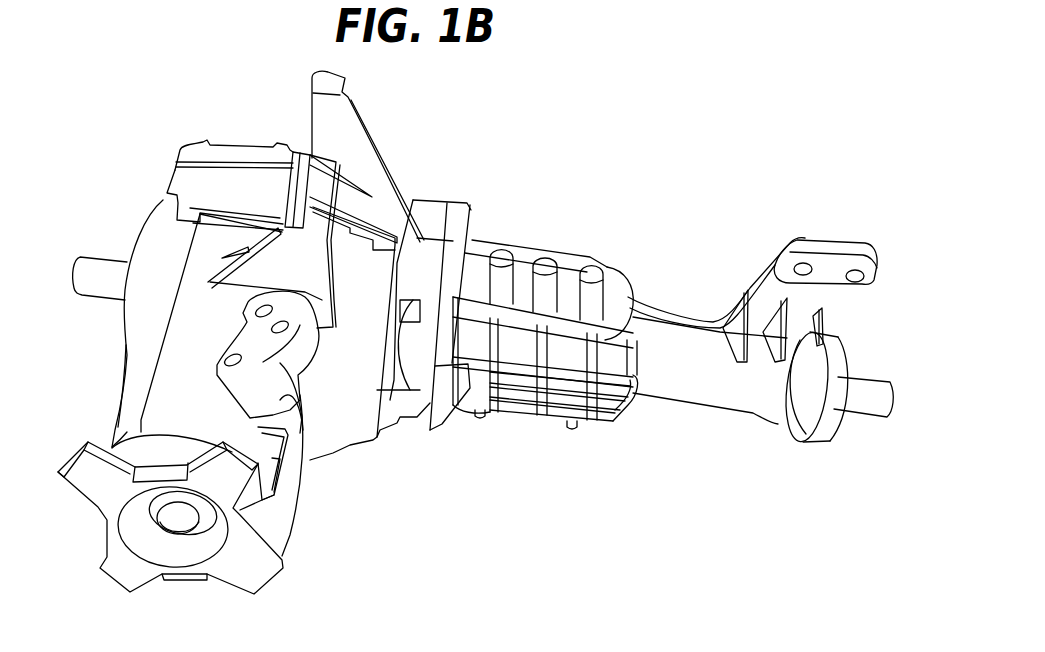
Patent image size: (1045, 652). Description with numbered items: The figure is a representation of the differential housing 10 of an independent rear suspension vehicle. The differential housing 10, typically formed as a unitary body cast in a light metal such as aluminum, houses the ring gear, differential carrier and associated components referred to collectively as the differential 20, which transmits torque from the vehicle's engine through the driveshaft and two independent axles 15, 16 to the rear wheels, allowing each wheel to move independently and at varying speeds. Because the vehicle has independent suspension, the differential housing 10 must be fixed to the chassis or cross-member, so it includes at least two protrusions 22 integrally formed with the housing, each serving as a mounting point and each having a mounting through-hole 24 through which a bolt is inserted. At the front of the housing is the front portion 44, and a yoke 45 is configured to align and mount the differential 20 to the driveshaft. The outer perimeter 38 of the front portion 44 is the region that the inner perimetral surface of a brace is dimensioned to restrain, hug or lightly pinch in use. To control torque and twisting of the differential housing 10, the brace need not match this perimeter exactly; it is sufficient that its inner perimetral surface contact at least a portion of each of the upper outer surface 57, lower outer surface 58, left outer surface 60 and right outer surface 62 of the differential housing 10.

The differential housing 10 is at (148, 218).
The independent axle 15 is at (102, 256).
The independent axle 16 is at (886, 380).
The differential 20 is at (232, 207).
The protrusion 22 is at (395, 178).
The mounting through-hole 24 is at (805, 272).
The outer perimeter 38 is at (230, 430).
The front portion 44 is at (128, 431).
The yoke 45 is at (200, 578).
The upper outer surface 57 is at (188, 420).
The lower outer surface 58 is at (255, 507).
The left outer surface 60 is at (118, 388).
The right outer surface 62 is at (285, 477).